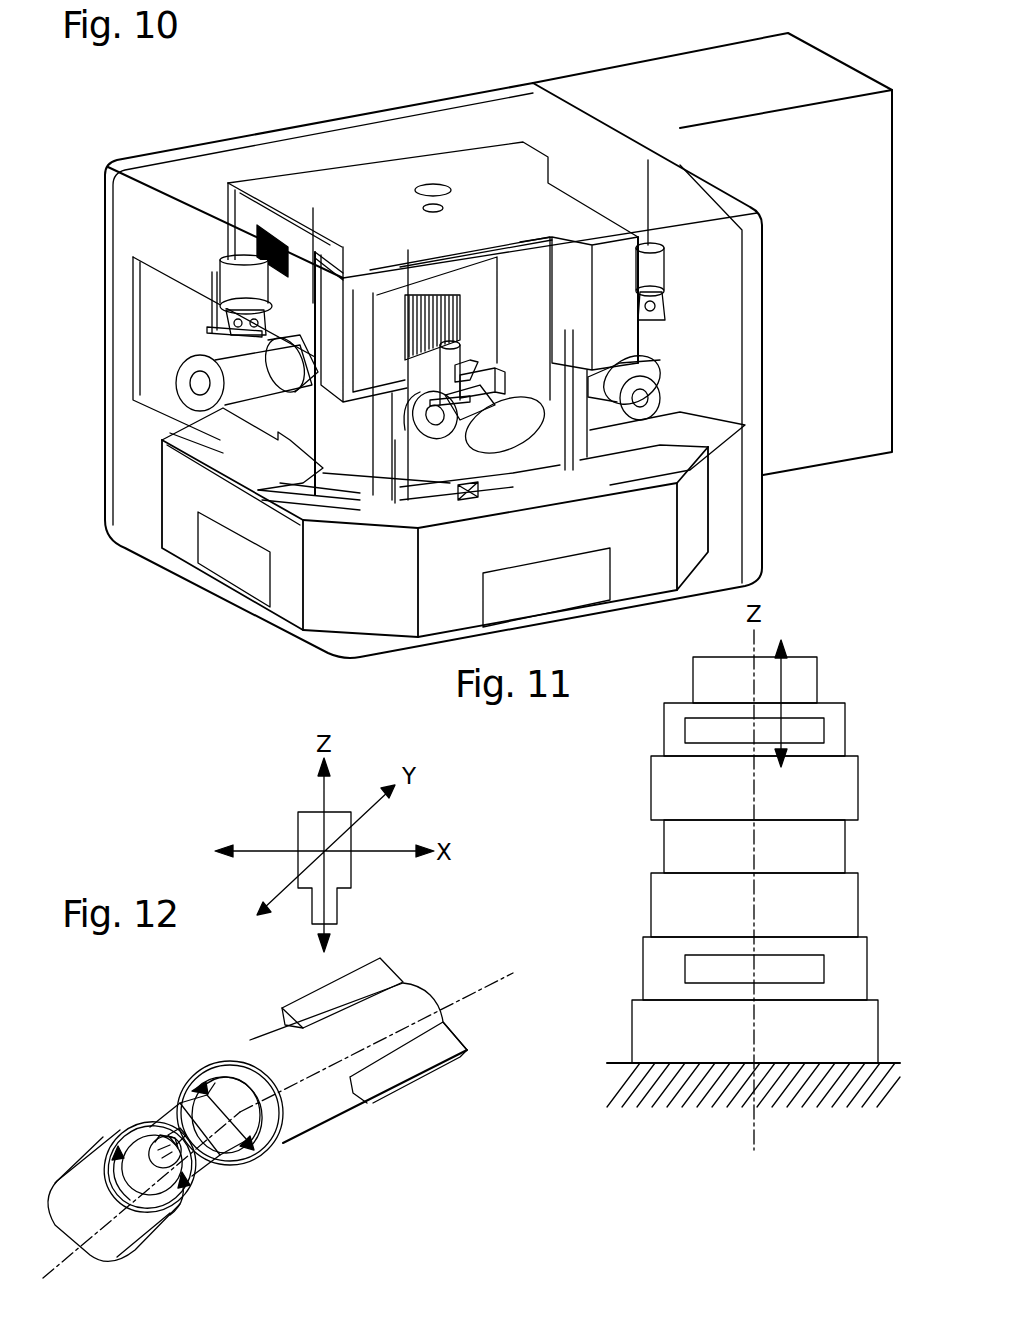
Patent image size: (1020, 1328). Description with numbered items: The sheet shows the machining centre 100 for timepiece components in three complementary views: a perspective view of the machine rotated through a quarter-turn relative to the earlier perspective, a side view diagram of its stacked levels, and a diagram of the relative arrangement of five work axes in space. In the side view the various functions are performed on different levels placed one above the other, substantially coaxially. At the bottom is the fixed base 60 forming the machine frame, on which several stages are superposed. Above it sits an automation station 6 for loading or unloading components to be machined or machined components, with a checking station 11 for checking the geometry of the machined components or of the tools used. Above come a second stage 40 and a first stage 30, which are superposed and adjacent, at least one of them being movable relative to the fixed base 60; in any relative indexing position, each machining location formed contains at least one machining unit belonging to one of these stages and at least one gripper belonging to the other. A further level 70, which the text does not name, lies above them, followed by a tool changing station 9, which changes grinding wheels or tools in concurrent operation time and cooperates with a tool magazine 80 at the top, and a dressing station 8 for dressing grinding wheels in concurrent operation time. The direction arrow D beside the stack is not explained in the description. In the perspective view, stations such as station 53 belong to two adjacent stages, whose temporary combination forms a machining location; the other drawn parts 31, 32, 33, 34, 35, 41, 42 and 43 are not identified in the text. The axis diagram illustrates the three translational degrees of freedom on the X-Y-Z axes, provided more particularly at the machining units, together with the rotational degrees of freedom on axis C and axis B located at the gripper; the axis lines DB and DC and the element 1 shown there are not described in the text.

In FIG. 10, the machining centre 100 is at (440, 78).
In FIG. 11, the machining centre 100 is at (898, 640).
In FIG. 10, the Z-axis column / spindle carrier 32 is at (258, 230).
In FIG. 10, the tool spindle 31 is at (207, 323).
In FIG. 10, the left workpiece spindle motor 41 is at (200, 393).
In FIG. 10, the station 53 is at (690, 265).
In FIG. 10, the spindle column 35 is at (660, 318).
In FIG. 10, the right workpiece spindle motor 43 is at (680, 365).
In FIG. 10, the center workpiece spindle motor 34 is at (508, 437).
In FIG. 10, the workpiece spindle carrier 42 is at (690, 520).
In FIG. 10, the machine bed 33 is at (375, 470).
In FIG. 11, the tool magazine 80 is at (797, 678).
In FIG. 11, the tool changing station 9 is at (835, 712).
In FIG. 11, the dressing station 8 is at (812, 732).
In FIG. 11, the Y-axis slide 70 is at (835, 803).
In FIG. 11, the first stage 30 is at (822, 848).
In FIG. 11, the second stage 40 is at (835, 907).
In FIG. 11, the automation station 6 is at (842, 950).
In FIG. 11, the checking station 11 is at (812, 972).
In FIG. 11, the fixed base 60 is at (853, 1032).
In FIG. 11, the direction of movement D is at (770, 1130).
In FIG. 12, the rotational work axis B is at (285, 1125).
In FIG. 12, the rotational work axis C is at (165, 1205).
In FIG. 12, the B rotation axis DB is at (487, 988).
In FIG. 12, the C rotation axis DC is at (52, 1272).
In FIG. 12, the workpiece 1 is at (180, 1160).